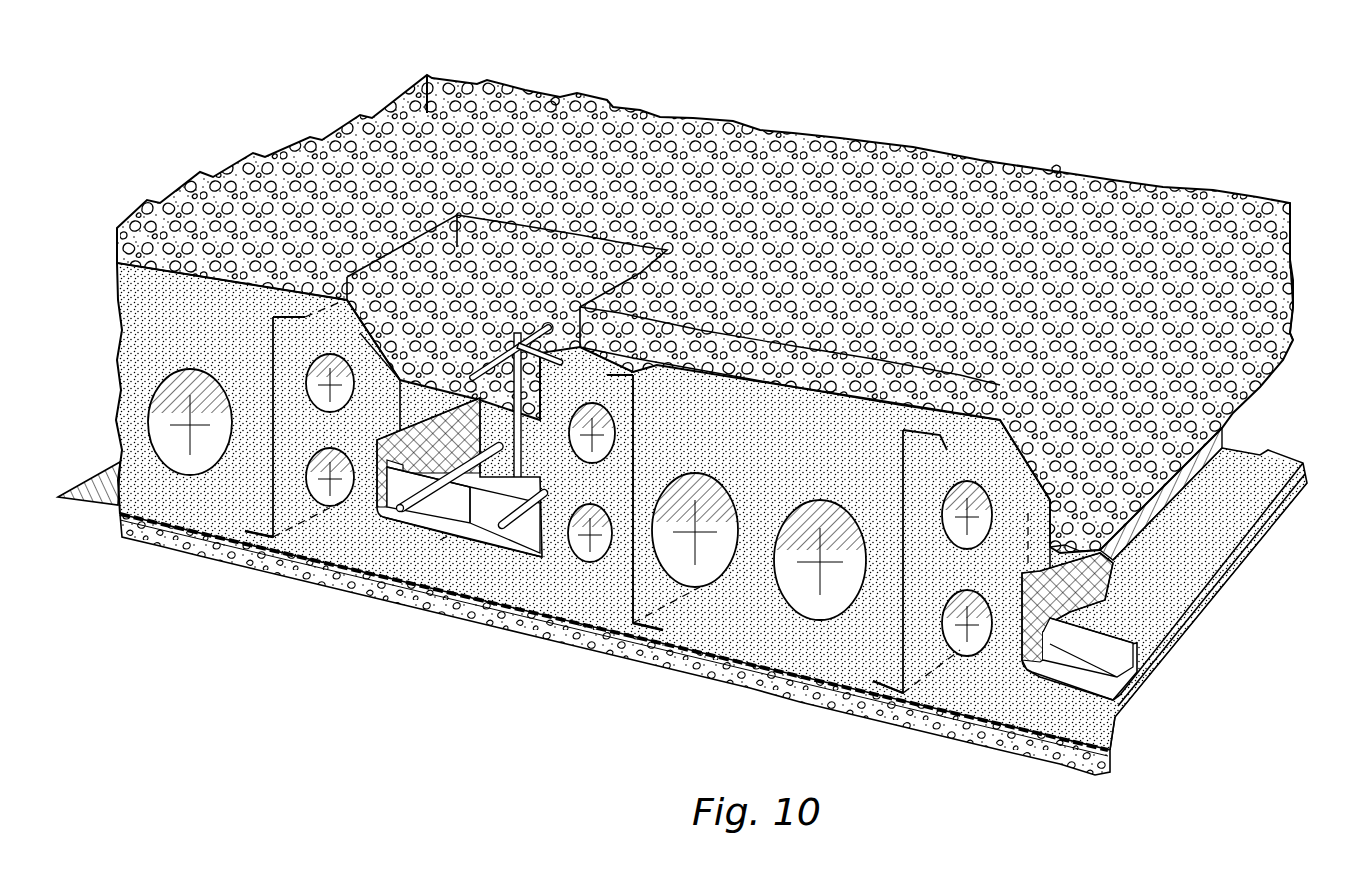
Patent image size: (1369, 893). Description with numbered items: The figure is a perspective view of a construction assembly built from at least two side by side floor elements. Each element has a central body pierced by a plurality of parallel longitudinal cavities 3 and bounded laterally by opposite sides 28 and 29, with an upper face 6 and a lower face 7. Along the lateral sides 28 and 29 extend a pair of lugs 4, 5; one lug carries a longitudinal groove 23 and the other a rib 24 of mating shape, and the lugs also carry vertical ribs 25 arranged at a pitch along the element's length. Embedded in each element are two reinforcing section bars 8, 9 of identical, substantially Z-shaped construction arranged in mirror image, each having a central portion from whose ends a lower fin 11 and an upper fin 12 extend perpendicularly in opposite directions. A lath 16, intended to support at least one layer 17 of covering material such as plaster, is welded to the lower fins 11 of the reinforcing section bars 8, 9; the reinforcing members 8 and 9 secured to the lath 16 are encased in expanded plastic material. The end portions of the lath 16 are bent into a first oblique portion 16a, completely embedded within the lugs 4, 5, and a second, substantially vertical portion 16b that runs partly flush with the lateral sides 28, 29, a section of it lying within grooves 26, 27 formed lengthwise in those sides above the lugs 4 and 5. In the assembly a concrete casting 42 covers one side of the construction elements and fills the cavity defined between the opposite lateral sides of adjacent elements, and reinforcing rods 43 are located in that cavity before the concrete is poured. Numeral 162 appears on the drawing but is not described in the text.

The concrete casting 42 is at (290, 155).
The upper face 6 is at (556, 100).
The reinforcing rods 43 is at (520, 330).
The upper fin 12 is at (283, 310).
The lateral side 29 is at (1290, 275).
The lateral side 28 is at (529, 327).
The reinforcing section bar 9 is at (272, 365).
The cavities 3 is at (148, 405).
The lath 16 is at (100, 470).
The vertical portion of the lath 16b is at (388, 410).
The layer of covering material 17 is at (138, 540).
The lower face 7 is at (193, 540).
The lower fin 11 is at (262, 545).
The vertical ribs 25 is at (430, 515).
The lug 5 is at (1263, 473).
The oblique portion of the lath 16a is at (440, 563).
The groove 23 is at (460, 570).
The lug 4 is at (478, 572).
The groove 27 is at (540, 482).
The reinforcing section bar 8 is at (640, 458).
The groove 26 is at (1055, 585).
The corner piece 162 is at (1075, 680).
The rib 24 is at (1175, 670).